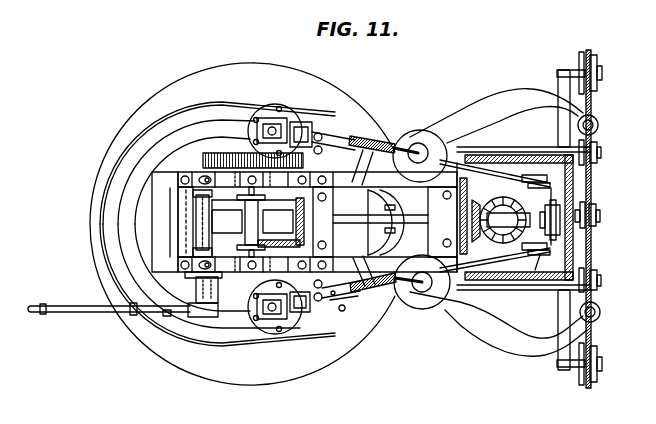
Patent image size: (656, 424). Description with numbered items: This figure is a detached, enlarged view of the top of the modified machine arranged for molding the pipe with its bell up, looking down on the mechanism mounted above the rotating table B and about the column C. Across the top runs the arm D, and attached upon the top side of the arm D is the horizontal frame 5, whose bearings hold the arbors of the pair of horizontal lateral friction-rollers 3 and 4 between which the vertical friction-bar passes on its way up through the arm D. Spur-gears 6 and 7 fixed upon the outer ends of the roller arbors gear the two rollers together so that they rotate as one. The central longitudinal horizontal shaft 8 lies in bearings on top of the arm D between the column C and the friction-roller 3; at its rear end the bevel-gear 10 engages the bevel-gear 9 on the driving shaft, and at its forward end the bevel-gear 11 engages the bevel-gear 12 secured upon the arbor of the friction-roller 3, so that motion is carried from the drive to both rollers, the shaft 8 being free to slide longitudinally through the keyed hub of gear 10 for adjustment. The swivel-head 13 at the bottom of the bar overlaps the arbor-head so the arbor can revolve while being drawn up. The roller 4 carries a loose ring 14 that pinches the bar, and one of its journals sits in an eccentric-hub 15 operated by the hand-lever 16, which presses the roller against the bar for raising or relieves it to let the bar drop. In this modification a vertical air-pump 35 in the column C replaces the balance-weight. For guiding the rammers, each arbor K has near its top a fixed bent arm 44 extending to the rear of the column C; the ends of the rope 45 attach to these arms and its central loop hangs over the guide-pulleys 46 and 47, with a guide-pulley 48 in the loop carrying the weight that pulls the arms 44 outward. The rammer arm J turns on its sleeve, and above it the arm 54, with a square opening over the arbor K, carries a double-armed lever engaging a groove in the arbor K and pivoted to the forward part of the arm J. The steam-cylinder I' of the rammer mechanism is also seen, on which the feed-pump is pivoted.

The friction-roller 3 is at (278, 221).
The friction-roller 4 is at (227, 221).
The horizontal frame 5 is at (185, 222).
The spur-gear 6 is at (253, 155).
The spur-gear 7 is at (259, 216).
The shaft 8 is at (380, 222).
The bevel-gear 9 is at (518, 256).
The bevel-gear 10 is at (516, 210).
The bevel-gear 11 is at (299, 217).
The bevel-gear 12 is at (287, 247).
The swivel-head 13 is at (202, 223).
The loose ring 14 is at (254, 228).
The eccentric-hub 15 is at (330, 290).
The hand-lever 16 is at (125, 300).
The air-pump 35 is at (344, 294).
The bent arm 44 is at (505, 223).
The rope 45 is at (598, 213).
The guide-pulley 46 is at (599, 216).
The guide-pulley 47 is at (600, 218).
The guide-pulley 48 is at (597, 215).
The arm 54 is at (370, 225).
The table B is at (242, 224).
The column C is at (345, 220).
The arm D is at (304, 222).
The steam-cylinder I' is at (269, 219).
The arm J is at (332, 217).
The arbor K is at (471, 219).